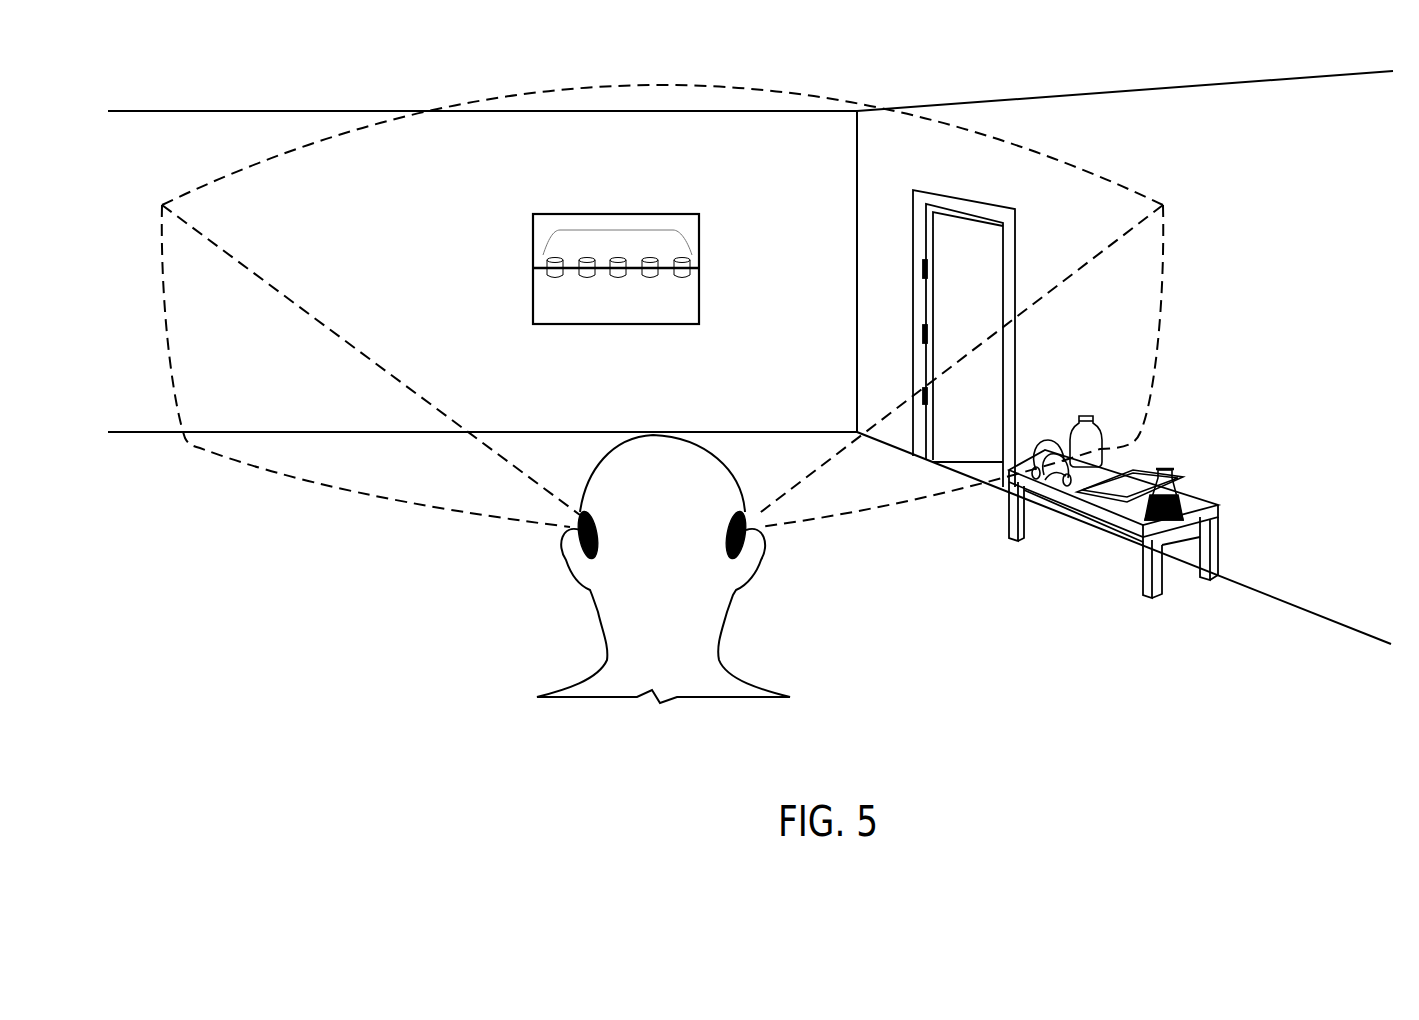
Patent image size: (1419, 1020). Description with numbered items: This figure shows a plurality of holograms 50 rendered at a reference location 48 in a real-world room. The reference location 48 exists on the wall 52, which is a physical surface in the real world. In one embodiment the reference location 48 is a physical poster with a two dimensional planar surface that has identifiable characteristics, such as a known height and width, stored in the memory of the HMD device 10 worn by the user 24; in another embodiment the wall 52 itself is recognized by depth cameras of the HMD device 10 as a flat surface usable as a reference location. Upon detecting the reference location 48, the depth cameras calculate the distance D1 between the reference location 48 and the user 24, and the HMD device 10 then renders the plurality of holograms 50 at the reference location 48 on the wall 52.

The HMD device 10 is at (587, 543).
The user 24 is at (651, 558).
The reference location 48 is at (708, 216).
The plurality of holograms 50 is at (617, 230).
The wall 52 is at (407, 178).
The distance D1 is at (620, 290).